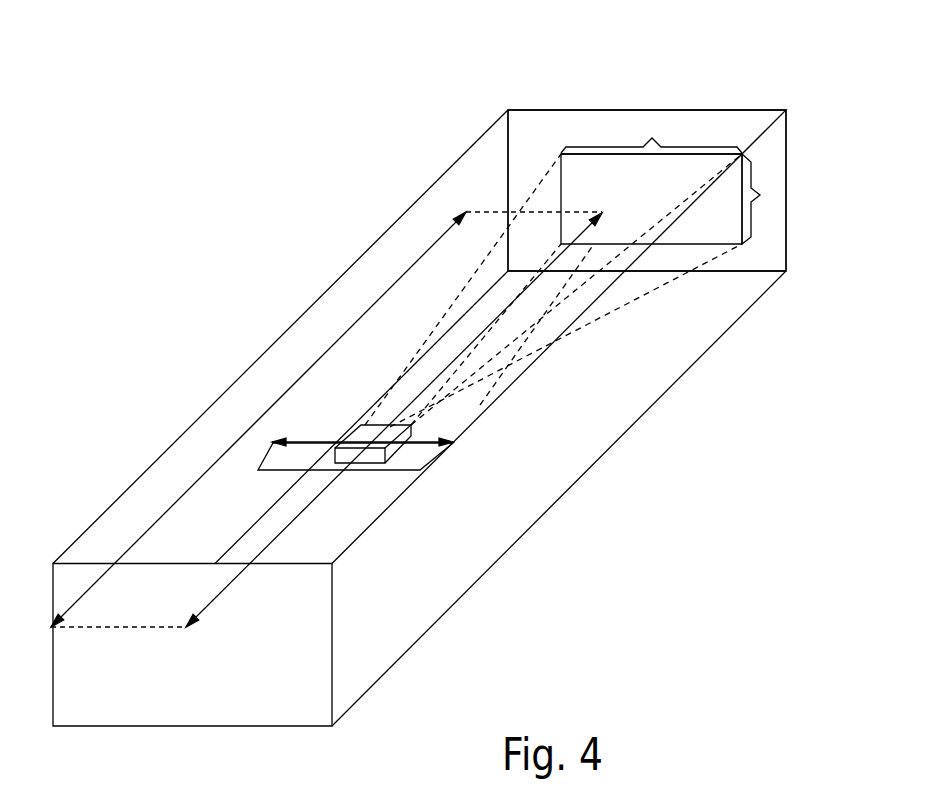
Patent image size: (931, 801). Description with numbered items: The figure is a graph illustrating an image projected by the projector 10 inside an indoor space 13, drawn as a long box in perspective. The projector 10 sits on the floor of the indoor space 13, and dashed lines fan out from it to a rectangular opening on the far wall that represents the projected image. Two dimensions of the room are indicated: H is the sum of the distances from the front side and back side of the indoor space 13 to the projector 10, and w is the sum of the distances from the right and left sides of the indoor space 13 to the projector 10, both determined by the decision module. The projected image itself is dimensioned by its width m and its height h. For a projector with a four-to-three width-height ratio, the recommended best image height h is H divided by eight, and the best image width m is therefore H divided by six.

The indoor space 13 is at (773, 110).
The projector 10 is at (387, 431).
The sum of front and back distances H is at (326, 419).
The sum of left and right distances w is at (328, 470).
The projected image width m is at (651, 130).
The projected image height h is at (762, 199).